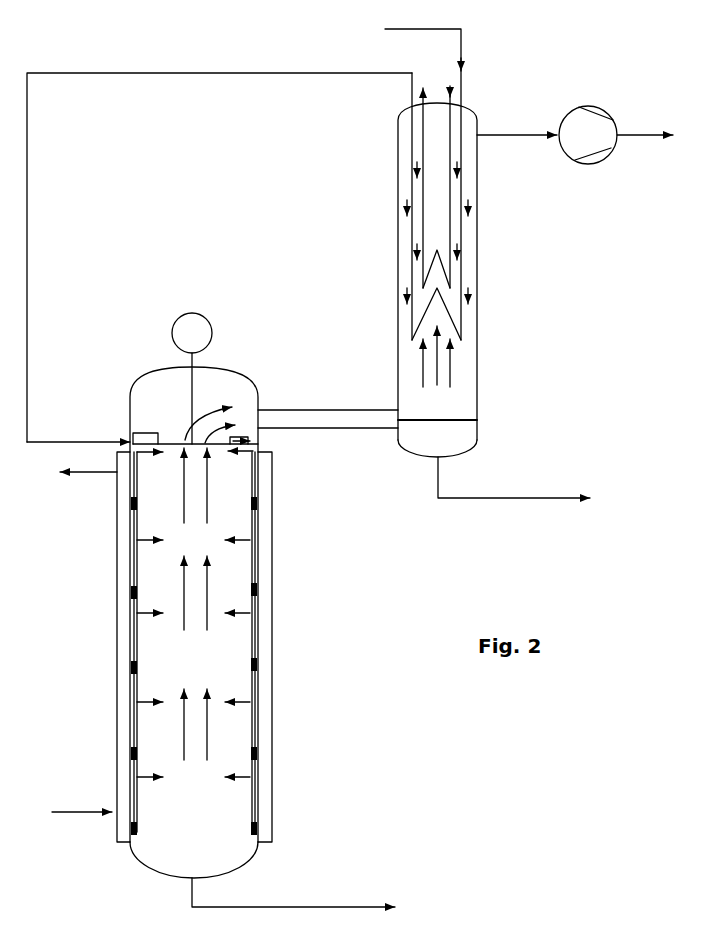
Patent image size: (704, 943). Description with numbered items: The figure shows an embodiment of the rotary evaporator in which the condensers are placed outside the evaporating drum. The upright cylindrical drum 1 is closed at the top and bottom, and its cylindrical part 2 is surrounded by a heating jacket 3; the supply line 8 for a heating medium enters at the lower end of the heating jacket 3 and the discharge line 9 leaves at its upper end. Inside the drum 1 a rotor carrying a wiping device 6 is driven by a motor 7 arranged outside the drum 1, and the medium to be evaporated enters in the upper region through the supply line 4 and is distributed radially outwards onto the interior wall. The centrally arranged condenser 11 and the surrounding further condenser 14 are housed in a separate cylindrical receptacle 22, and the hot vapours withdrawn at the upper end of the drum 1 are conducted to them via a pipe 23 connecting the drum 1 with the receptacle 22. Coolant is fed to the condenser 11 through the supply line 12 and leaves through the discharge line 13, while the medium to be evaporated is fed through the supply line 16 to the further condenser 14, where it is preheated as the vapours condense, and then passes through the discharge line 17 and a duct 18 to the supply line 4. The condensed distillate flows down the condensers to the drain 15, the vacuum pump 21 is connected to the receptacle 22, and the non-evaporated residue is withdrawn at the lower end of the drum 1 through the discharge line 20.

The drum 1 is at (235, 377).
The cylindrical part 2 is at (258, 452).
The heating jacket 3 is at (268, 652).
The supply line 4 is at (115, 440).
The wiping device 6 is at (254, 525).
The motor 7 is at (182, 314).
The supply line for heating medium 8 is at (84, 810).
The discharge line for heating medium 9 is at (114, 474).
The condenser 11 is at (452, 236).
The supply line for coolant 12 is at (450, 84).
The discharge line for coolant 13 is at (422, 84).
The further condenser 14 is at (465, 283).
The drain for distillate 15 is at (515, 496).
The supply line 16 is at (465, 60).
The discharge line 17 is at (411, 97).
The duct 18 is at (28, 248).
The discharge line 20 is at (300, 905).
The vacuum pump 21 is at (608, 106).
The cylindrical receptacle 22 is at (480, 412).
The pipe 23 is at (333, 410).